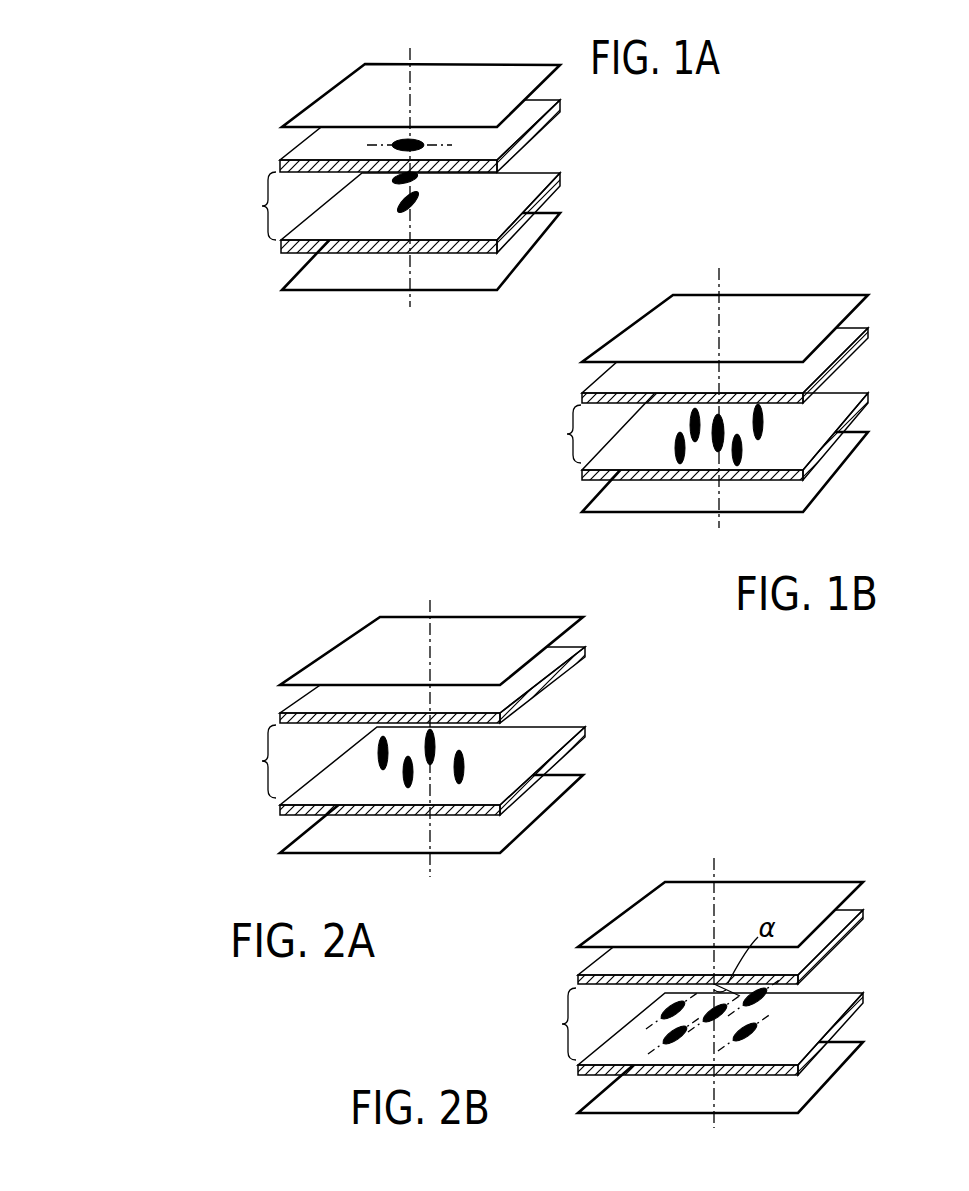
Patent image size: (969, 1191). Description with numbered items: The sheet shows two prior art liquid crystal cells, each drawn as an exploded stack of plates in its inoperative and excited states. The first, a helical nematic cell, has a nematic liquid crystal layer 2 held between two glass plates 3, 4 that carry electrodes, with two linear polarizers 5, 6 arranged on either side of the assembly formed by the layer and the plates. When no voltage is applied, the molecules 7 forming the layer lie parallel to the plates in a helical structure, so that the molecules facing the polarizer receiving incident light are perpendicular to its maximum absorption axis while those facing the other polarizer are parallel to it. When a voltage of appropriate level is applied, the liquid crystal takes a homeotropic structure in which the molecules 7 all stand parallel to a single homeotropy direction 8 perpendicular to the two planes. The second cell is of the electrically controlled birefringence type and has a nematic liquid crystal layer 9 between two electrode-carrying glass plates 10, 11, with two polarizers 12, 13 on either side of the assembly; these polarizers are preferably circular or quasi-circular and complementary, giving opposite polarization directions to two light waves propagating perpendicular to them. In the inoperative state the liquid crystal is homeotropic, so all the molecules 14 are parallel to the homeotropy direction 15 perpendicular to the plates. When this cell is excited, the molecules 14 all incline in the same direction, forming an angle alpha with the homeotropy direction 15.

In FIG. 1A, the nematic liquid crystal layer 2 is at (255, 206).
In FIG. 1B, the nematic liquid crystal layer 2 is at (561, 434).
In FIG. 1A, the glass plate 3 is at (290, 250).
In FIG. 1B, the glass plate 3 is at (595, 475).
In FIG. 1A, the glass plate 4 is at (320, 160).
In FIG. 1B, the glass plate 4 is at (610, 395).
In FIG. 1A, the linear polarizer 5 is at (312, 258).
In FIG. 1B, the linear polarizer 5 is at (802, 513).
In FIG. 1A, the linear polarizer 6 is at (338, 95).
In FIG. 1B, the linear polarizer 6 is at (658, 310).
In FIG. 1A, the molecules 7 is at (434, 198).
In FIG. 1B, the molecules 7 is at (775, 449).
In FIG. 1A, the homeotropy direction 8 is at (412, 55).
In FIG. 1B, the homeotropy direction 8 is at (722, 283).
In FIG. 2A, the nematic liquid crystal layer 9 is at (255, 761).
In FIG. 2B, the nematic liquid crystal layer 9 is at (556, 1024).
In FIG. 2A, the glass plate 10 is at (302, 808).
In FIG. 2B, the glass plate 10 is at (600, 1073).
In FIG. 2A, the glass plate 11 is at (320, 713).
In FIG. 2B, the glass plate 11 is at (612, 972).
In FIG. 2A, the polarizer 12 is at (310, 847).
In FIG. 2B, the polarizer 12 is at (610, 1113).
In FIG. 2A, the polarizer 13 is at (312, 670).
In FIG. 2B, the polarizer 13 is at (662, 897).
In FIG. 2A, the molecules 14 is at (466, 739).
In FIG. 2B, the molecules 14 is at (772, 1037).
In FIG. 2A, the homeotropy direction 15 is at (428, 613).
In FIG. 2B, the homeotropy direction 15 is at (718, 867).